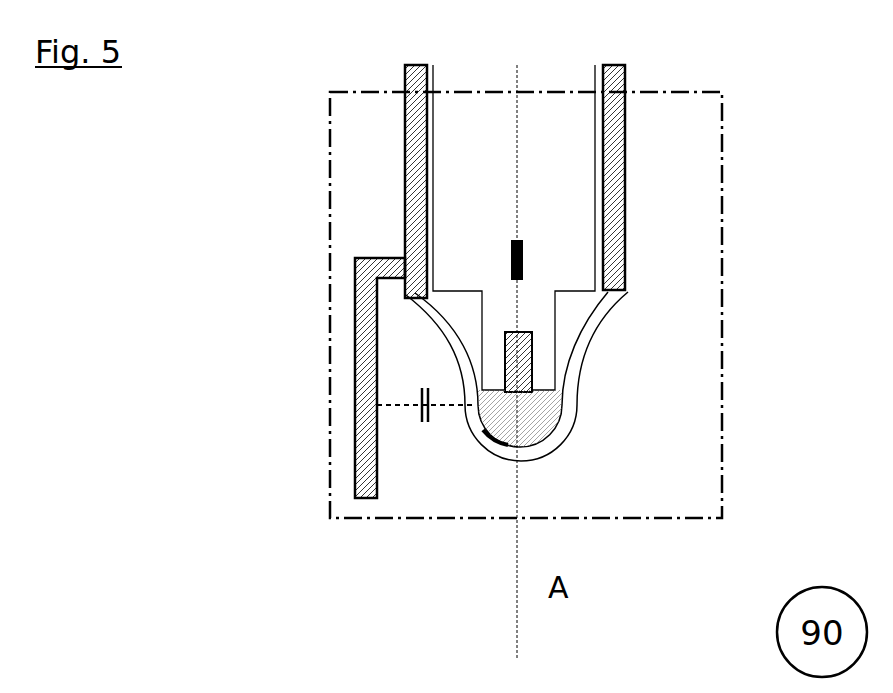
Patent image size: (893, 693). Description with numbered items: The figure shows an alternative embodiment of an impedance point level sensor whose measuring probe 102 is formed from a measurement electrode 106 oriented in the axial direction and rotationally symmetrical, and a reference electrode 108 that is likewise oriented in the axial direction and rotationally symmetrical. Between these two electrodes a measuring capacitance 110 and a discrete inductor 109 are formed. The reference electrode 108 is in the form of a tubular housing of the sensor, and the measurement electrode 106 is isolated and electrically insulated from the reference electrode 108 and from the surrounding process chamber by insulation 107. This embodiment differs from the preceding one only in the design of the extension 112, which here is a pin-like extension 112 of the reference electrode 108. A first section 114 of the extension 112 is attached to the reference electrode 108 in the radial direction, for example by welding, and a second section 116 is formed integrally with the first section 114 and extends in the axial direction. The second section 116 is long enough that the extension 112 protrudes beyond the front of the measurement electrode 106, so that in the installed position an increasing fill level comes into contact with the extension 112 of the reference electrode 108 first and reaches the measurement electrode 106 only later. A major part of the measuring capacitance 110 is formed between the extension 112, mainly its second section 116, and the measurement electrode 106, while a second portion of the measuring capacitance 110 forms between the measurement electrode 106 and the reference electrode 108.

The measuring probe 102 is at (445, 503).
The measurement electrode 106 is at (550, 430).
The insulation 107 is at (592, 325).
The reference electrode 108 is at (628, 255).
The discrete inductor 109 is at (524, 259).
The measuring capacitance 110 is at (422, 430).
The extension 112 is at (290, 353).
The first section 114 is at (385, 270).
The second section 116 is at (360, 452).